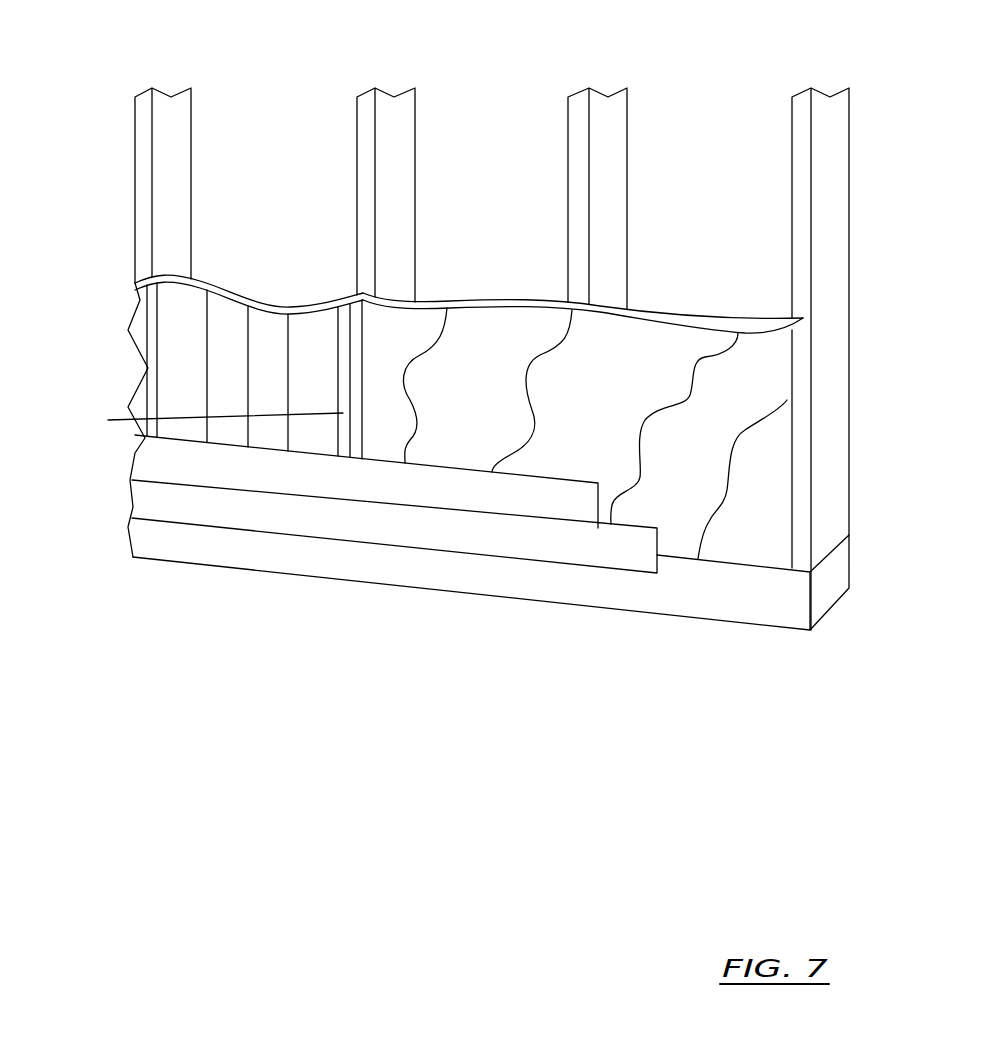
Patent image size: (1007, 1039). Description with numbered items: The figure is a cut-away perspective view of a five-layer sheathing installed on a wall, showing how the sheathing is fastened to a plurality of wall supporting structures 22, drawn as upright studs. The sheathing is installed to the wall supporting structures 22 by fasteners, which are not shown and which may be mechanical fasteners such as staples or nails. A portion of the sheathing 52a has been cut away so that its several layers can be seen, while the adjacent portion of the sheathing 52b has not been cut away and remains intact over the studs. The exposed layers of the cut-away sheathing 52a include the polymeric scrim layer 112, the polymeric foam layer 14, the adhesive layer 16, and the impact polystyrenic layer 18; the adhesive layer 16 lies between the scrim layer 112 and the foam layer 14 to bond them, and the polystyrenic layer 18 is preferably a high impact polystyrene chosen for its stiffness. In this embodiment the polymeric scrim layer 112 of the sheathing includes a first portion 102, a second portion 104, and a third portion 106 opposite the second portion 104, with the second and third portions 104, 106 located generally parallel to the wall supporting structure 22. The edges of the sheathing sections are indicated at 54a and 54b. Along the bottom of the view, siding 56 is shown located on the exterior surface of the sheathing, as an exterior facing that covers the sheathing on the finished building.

The wall supporting structure 22 is at (179, 90).
The sheathing 52a is at (701, 292).
The sheathing 52b is at (222, 256).
The board end edge 54a is at (378, 334).
The board end edge 54b is at (346, 340).
The first portion 102 is at (255, 325).
The second portion 104 is at (150, 342).
The third portion 106 is at (108, 420).
The polymeric scrim layer 112 is at (207, 364).
The adhesive layer 16 is at (461, 396).
The impact polystyrenic layer 18 is at (571, 424).
The polymeric foam layer 14 is at (673, 471).
The siding 56 is at (250, 481).